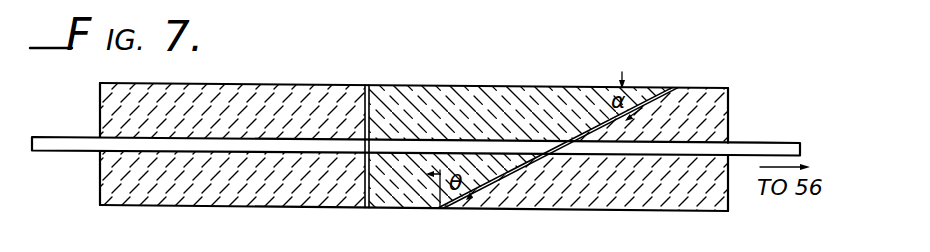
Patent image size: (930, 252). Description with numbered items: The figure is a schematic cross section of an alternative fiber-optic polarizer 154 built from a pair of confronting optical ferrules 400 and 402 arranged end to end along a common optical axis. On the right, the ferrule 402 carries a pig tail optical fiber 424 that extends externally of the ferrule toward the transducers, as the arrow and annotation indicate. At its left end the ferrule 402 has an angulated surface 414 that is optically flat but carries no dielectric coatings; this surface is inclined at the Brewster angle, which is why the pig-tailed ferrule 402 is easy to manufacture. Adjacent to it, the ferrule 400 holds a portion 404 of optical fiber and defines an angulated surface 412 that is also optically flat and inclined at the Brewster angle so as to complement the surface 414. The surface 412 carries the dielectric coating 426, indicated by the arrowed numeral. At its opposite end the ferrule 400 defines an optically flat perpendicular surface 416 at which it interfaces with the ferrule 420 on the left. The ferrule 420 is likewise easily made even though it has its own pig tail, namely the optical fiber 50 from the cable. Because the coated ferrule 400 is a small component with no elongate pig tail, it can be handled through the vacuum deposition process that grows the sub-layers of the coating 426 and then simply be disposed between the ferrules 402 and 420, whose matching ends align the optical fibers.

The optical fiber 50 is at (68, 137).
The polarizer 154 is at (662, 74).
The optical ferrule 400 is at (404, 200).
The optical ferrule 402 is at (705, 88).
The portion of optical fiber 404 is at (410, 141).
The angulated surface 412 is at (507, 173).
The angulated surface 414 is at (493, 181).
The perpendicular surface 416 is at (363, 203).
The ferrule 420 is at (295, 84).
The pig tail optical fiber 424 is at (708, 140).
The dielectric coating 426 is at (598, 121).